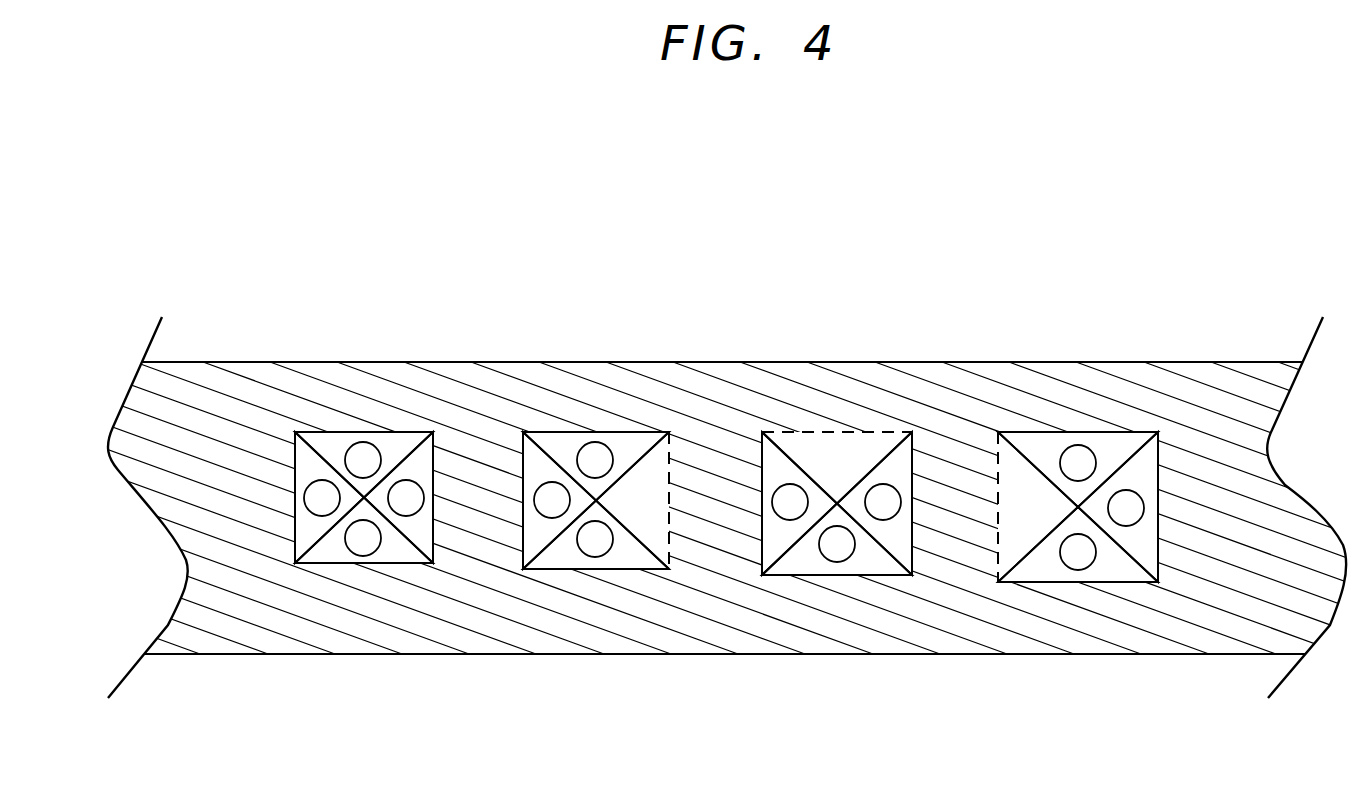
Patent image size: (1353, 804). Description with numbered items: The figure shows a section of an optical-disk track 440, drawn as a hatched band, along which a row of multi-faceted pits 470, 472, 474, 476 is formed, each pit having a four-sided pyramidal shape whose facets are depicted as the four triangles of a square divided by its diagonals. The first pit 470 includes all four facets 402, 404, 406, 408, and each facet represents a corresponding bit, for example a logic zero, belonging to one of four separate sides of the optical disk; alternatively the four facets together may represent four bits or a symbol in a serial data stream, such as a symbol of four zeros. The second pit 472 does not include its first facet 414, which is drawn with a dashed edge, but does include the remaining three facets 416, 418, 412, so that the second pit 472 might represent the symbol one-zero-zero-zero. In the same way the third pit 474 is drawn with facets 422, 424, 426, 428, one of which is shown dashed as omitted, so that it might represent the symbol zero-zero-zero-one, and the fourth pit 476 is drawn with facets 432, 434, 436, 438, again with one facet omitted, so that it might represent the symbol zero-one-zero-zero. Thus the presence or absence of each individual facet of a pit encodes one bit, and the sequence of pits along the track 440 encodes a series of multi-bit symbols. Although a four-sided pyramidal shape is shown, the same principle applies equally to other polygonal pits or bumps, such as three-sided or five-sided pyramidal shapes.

The facet 402 is at (397, 548).
The facet 404 is at (422, 465).
The facet 406 is at (397, 445).
The facet 408 is at (310, 528).
The facet 412 is at (630, 553).
The first facet 414 is at (658, 472).
The facet 416 is at (633, 447).
The facet 418 is at (535, 533).
The bottom sub-pixel of third pixel 422 is at (872, 560).
The right sub-pixel of third pixel 424 is at (900, 472).
The top sub-pixel of third pixel (dashed) 426 is at (848, 443).
The left sub-pixel of third pixel 428 is at (775, 538).
The bottom sub-pixel of fourth pixel 432 is at (1109, 563).
The right sub-pixel of fourth pixel 434 is at (1144, 472).
The top sub-pixel of fourth pixel 436 is at (1120, 447).
The left sub-pixel of fourth pixel (dashed) 438 is at (1013, 528).
The substrate 440 is at (1040, 390).
The first pit 470 is at (385, 441).
The second pit 472 is at (617, 441).
The third pit 474 is at (858, 441).
The fourth pit 476 is at (1099, 441).